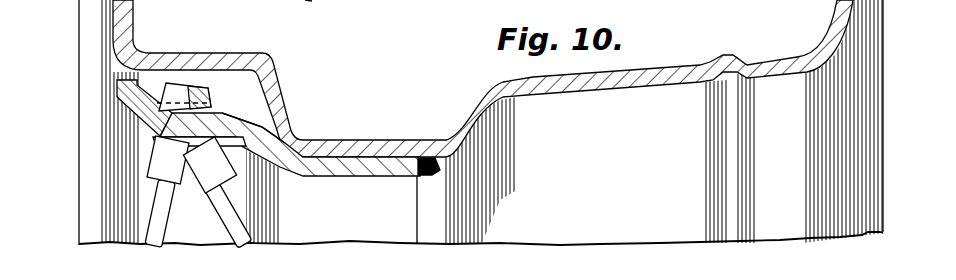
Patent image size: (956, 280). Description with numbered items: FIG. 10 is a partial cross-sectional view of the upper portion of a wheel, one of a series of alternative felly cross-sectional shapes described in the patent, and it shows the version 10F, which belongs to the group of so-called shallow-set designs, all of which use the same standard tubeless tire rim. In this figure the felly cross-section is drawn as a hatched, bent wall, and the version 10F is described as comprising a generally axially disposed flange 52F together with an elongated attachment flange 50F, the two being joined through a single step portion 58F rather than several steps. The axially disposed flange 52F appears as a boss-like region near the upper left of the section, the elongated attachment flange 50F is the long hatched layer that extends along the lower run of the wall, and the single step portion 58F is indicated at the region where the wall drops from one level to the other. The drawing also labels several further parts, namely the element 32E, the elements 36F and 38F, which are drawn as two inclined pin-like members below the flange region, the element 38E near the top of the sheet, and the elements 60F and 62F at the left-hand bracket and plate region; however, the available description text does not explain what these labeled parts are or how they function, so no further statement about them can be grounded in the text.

The version 10F is at (256, 30).
The opening 32E is at (267, 117).
The first pin 36F is at (158, 217).
The second pin 38F is at (247, 240).
The pin 38E is at (318, 0).
The elongated attachment flange 50F is at (387, 160).
The generally axially disposed flange 52F is at (155, 107).
The single step portion 58F is at (247, 153).
The bracket 60F is at (127, 95).
The washer plate 62F is at (167, 141).